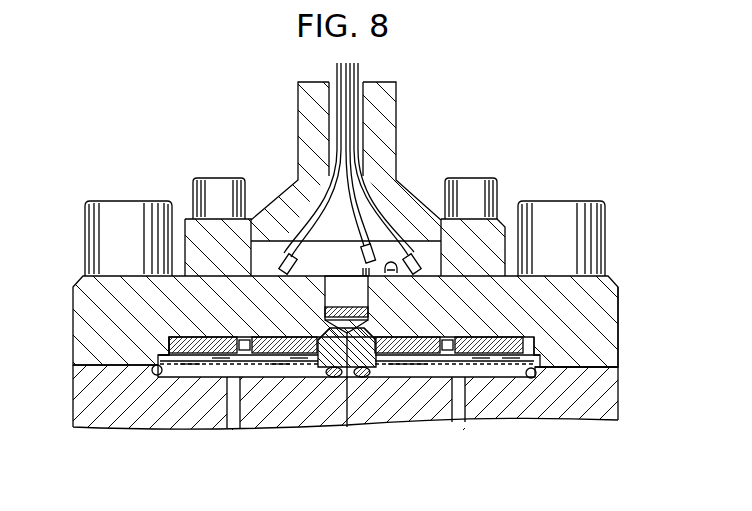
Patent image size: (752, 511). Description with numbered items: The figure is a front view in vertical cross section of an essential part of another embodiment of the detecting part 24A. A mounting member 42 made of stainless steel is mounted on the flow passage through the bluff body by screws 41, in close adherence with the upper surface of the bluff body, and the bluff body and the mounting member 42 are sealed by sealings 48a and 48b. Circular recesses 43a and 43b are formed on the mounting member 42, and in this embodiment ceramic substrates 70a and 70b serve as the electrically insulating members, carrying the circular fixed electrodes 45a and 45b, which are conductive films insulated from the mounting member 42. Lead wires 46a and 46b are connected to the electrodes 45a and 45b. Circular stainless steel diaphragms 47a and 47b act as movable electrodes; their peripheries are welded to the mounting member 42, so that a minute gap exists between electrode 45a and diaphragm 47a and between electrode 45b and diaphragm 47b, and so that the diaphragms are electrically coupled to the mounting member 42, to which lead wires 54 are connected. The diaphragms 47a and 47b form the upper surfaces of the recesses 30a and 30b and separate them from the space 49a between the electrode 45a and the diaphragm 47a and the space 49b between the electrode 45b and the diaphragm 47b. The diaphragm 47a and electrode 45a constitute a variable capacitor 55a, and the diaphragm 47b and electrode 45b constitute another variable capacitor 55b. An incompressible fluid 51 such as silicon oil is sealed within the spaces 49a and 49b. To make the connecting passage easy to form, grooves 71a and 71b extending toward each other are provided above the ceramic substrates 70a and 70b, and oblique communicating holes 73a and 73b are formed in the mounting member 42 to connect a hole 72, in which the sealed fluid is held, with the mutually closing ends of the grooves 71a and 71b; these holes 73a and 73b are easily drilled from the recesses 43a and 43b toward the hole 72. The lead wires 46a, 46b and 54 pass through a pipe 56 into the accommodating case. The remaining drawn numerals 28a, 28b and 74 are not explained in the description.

The detecting part 24A is at (617, 250).
The port 28a is at (460, 395).
The port 28b is at (236, 395).
The recess 30a is at (538, 377).
The recess 30b is at (157, 376).
The screw 41 is at (110, 200).
The mounting member 42 is at (604, 292).
The circular recess 43a is at (512, 337).
The circular recess 43b is at (187, 338).
The fixed electrode 45a is at (397, 364).
The fixed electrode 45b is at (192, 366).
The lead wire 46a is at (397, 178).
The lead wire 46b is at (294, 183).
The diaphragm 47a is at (512, 372).
The diaphragm 47b is at (298, 362).
The sealing 48a is at (540, 375).
The sealing 48b is at (152, 377).
The space 49a is at (481, 372).
The space 49b is at (221, 372).
The incompressible fluid 51 is at (349, 380).
The lead wire 54 is at (349, 158).
The variable capacitor 55a is at (530, 350).
The variable capacitor 55b is at (166, 346).
The pipe 56 is at (312, 100).
The ceramic substrate 70a is at (472, 337).
The ceramic substrate 70b is at (233, 336).
The groove 71a is at (417, 366).
The groove 71b is at (280, 366).
The hole 72 is at (346, 304).
The oblique communicating hole 73a is at (384, 334).
The oblique communicating hole 73b is at (314, 334).
The lead 74 is at (345, 273).